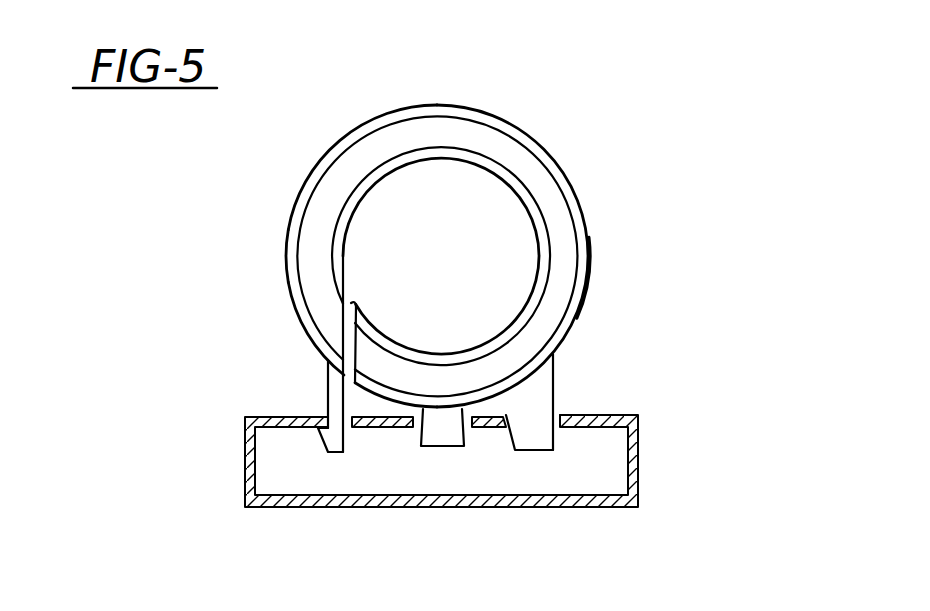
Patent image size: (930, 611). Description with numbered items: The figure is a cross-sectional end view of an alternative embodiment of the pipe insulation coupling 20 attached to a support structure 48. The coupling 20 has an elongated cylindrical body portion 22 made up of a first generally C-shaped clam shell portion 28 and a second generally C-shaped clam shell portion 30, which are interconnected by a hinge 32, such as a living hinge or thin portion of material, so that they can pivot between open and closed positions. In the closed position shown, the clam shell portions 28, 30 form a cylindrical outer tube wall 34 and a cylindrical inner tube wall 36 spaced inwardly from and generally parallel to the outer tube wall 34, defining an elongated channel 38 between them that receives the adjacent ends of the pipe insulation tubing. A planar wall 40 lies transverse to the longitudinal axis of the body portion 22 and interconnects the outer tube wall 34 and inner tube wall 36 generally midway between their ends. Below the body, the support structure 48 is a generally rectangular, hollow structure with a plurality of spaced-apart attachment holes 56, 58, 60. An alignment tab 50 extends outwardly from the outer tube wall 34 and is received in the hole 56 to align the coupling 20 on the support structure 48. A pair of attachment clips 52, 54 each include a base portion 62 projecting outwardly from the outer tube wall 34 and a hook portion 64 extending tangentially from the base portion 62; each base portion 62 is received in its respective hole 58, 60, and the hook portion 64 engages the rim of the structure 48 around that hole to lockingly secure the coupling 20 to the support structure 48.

The pipe insulation coupling 20 is at (668, 90).
The elongated cylindrical body portion 22 is at (412, 100).
The first generally C-shaped clam shell portion 28 is at (284, 212).
The second generally C-shaped clam shell portion 30 is at (596, 322).
The hinge 32 is at (587, 240).
The cylindrical outer tube wall 34 is at (288, 265).
The cylindrical inner tube wall 36 is at (436, 158).
The elongated channel 38 is at (510, 158).
The planar wall 40 is at (461, 395).
The support structure 48 is at (640, 452).
The alignment tab 50 is at (448, 447).
The attachment clip 52 is at (335, 455).
The attachment clip 54 is at (528, 449).
The attachment hole 56 is at (418, 427).
The attachment hole 58 is at (327, 417).
The attachment hole 60 is at (503, 414).
The base portion 62 is at (331, 388).
The hook portion 64 is at (318, 438).